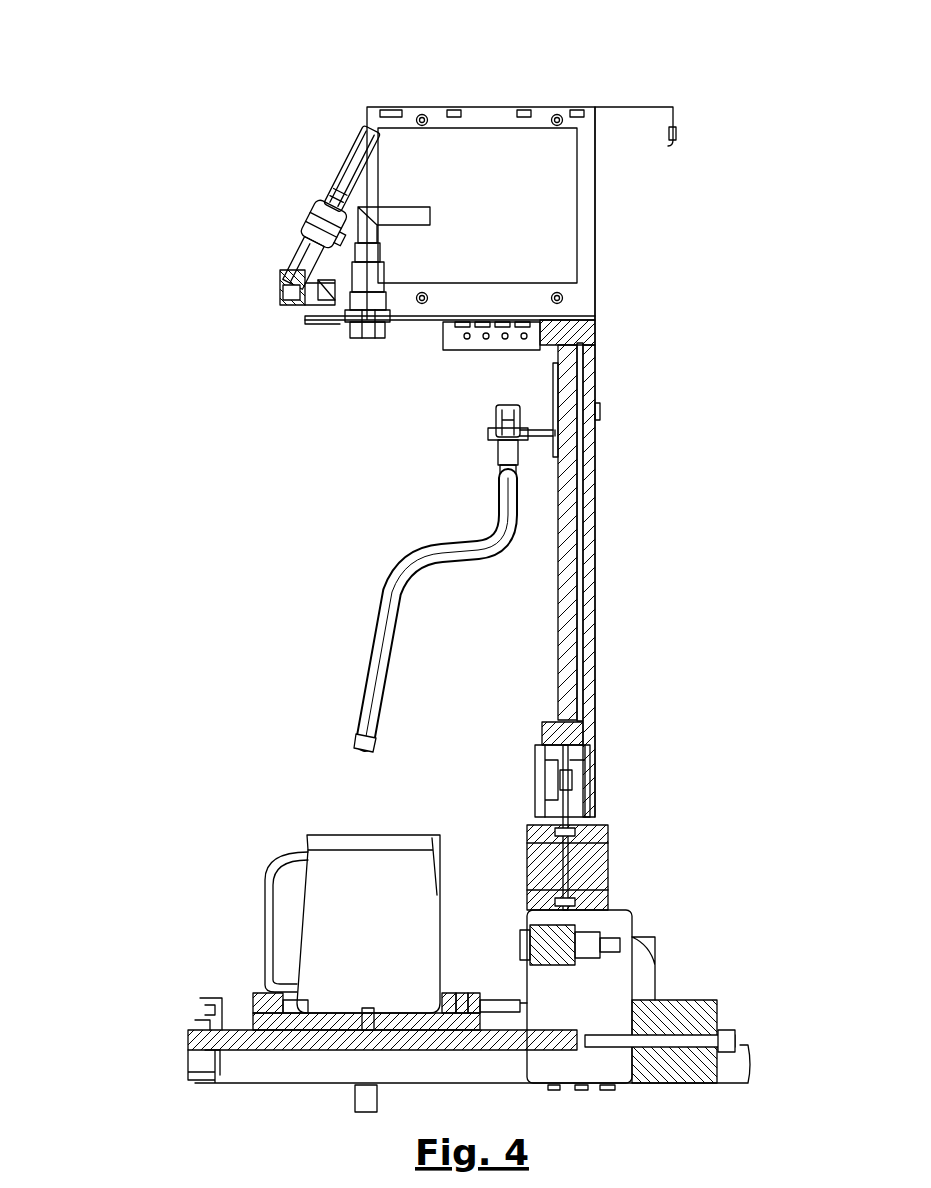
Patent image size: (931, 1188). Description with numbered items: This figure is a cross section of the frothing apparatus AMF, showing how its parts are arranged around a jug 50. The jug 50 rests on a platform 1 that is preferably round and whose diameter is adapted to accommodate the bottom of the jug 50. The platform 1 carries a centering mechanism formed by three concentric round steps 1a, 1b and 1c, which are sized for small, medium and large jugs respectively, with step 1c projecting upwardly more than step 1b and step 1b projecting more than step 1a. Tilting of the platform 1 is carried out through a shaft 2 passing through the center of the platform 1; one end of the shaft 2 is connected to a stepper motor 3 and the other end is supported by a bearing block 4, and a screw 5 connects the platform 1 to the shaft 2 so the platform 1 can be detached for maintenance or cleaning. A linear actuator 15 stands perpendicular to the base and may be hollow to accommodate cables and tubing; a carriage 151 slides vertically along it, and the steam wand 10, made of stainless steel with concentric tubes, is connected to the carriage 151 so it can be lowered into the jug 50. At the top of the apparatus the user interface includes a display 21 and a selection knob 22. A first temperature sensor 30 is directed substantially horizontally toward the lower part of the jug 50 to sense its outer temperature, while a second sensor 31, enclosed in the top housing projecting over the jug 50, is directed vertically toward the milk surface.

The frothing apparatus AMF is at (182, 200).
The platform 1 is at (252, 1010).
The round step 1a is at (443, 1003).
The round step 1b is at (455, 1000).
The round step 1c is at (470, 1000).
The shaft 2 is at (185, 1040).
The stepper motor 3 is at (678, 998).
The bearing block 4 is at (185, 1053).
The screw 5 is at (292, 1028).
The steam wand 10 is at (316, 632).
The linear actuator 15 is at (595, 522).
The display 21 is at (338, 160).
The selection knob 22 is at (280, 300).
The first temperature sensor 30 is at (550, 945).
The second sensor 31 is at (364, 333).
The jug 50 is at (205, 877).
The carriage 151 is at (553, 402).